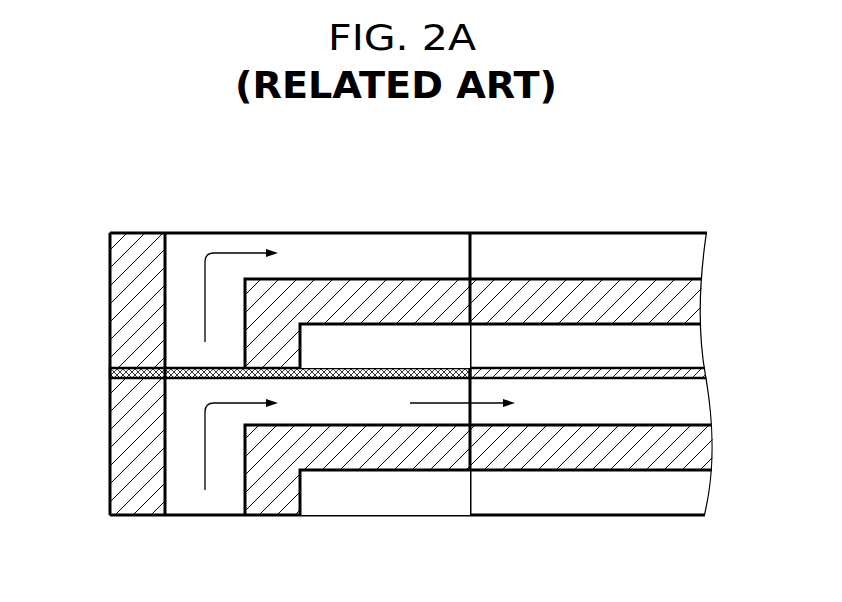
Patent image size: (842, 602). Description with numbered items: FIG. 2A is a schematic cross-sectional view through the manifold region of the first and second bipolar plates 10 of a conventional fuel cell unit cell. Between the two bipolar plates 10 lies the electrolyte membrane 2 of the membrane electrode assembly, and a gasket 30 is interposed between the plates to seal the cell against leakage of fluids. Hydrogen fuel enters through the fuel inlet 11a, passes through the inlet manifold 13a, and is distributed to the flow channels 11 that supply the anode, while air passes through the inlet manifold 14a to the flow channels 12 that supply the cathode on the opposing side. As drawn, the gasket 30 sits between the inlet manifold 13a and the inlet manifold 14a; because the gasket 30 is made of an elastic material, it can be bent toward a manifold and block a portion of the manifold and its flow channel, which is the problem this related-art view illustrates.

The bipolar plate 10 is at (118, 294).
The gasket 30 is at (110, 376).
The electrolyte membrane 2 is at (702, 376).
The flow channel 11 is at (683, 255).
The flow channel 12 is at (688, 344).
The fuel inlet 11a is at (188, 493).
The inlet manifold 13a is at (377, 262).
The inlet manifold 14a is at (416, 355).